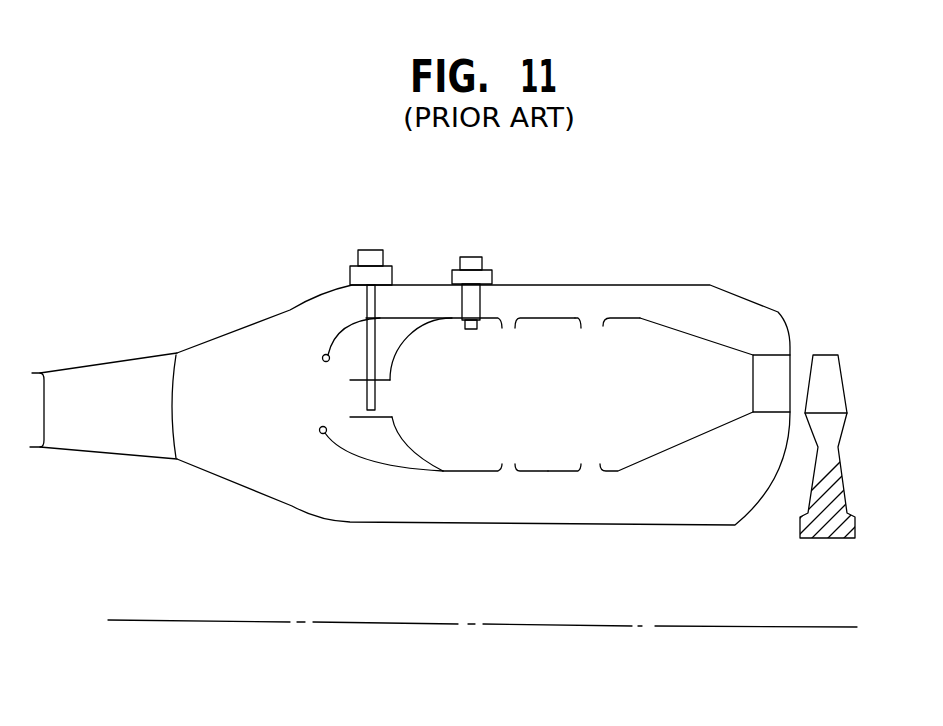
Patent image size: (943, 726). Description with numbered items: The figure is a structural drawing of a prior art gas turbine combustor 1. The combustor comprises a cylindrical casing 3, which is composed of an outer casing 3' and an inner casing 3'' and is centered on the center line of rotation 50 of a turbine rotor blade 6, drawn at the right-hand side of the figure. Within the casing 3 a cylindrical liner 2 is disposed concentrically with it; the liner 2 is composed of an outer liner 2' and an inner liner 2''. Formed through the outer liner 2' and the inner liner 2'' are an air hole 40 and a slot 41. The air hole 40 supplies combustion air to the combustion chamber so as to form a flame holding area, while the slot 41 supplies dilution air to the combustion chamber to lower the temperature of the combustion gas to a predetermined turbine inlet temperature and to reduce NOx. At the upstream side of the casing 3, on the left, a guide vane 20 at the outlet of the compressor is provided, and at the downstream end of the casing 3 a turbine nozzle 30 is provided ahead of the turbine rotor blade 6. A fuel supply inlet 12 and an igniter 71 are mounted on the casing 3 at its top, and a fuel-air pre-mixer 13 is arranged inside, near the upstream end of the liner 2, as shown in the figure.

The gas turbine combustor 1 is at (587, 278).
The cylindrical liner 2 is at (548, 261).
The outer liner 2' is at (600, 252).
The inner liner 2'' is at (530, 576).
The cylindrical casing 3 is at (641, 263).
The outer casing 3' is at (696, 276).
The inner casing 3'' is at (668, 550).
The turbine rotor blade 6 is at (825, 365).
The fuel supply inlet 12 is at (357, 255).
The fuel-air pre-mixer 13 is at (384, 418).
The guide vane 20 is at (113, 435).
The turbine nozzle 30 is at (768, 372).
The air hole 40 is at (505, 316).
The slot 41 is at (543, 471).
The center line of rotation 50 is at (735, 627).
The igniter 71 is at (470, 267).